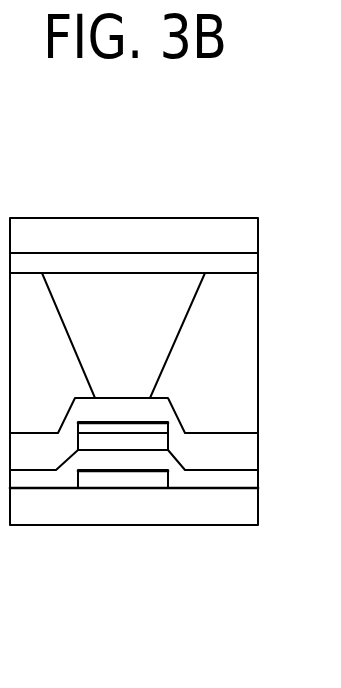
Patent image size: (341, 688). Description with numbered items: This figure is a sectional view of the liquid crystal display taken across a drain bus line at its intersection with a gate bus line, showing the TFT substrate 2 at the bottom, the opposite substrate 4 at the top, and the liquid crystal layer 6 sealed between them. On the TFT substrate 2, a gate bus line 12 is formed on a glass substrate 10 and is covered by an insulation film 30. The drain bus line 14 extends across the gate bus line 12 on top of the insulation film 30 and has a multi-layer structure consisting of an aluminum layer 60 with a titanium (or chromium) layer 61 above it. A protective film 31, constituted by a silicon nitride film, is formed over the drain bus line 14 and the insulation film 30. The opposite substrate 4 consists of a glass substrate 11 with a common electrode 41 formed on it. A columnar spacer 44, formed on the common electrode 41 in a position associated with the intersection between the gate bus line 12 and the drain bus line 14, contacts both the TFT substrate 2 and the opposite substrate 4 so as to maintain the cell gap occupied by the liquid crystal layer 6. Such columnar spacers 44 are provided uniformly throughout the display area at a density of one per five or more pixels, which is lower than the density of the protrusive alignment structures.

The opposite substrate 4 is at (172, 267).
The TFT substrate 2 is at (172, 488).
The glass substrate 11 is at (245, 237).
The common electrode 41 is at (245, 263).
The columnar spacer 44 is at (165, 313).
The liquid crystal layer 6 is at (245, 357).
The drain bus line 14 is at (152, 415).
The protective film 31 is at (245, 448).
The insulation film 30 is at (245, 480).
The glass substrate 10 is at (245, 512).
The gate bus line 12 is at (145, 478).
The aluminum layer 60 is at (85, 443).
The titanium layer 61 is at (98, 427).